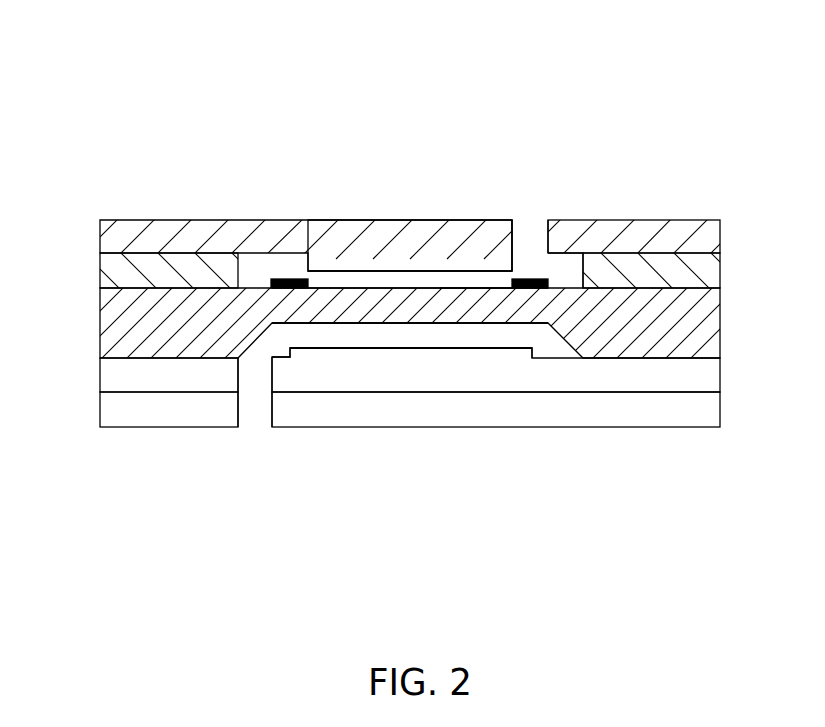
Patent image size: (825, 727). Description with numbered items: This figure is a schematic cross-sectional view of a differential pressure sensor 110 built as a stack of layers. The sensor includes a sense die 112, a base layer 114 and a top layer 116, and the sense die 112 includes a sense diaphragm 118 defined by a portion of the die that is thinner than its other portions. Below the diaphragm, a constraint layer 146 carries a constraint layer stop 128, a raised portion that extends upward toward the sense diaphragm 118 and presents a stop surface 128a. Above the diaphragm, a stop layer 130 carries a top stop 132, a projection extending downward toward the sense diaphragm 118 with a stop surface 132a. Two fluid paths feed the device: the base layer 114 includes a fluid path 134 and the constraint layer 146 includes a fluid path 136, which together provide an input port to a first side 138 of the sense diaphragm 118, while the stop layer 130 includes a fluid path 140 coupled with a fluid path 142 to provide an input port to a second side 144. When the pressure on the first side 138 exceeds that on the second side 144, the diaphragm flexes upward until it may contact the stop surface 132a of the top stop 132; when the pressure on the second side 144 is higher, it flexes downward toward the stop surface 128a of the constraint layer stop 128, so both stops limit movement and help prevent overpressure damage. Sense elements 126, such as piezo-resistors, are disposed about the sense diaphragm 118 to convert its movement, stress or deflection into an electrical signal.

The pressure sensor 110 is at (235, 76).
The sense die 112 is at (717, 319).
The base layer 114 is at (717, 408).
The top layer 116 is at (717, 270).
The sense diaphragm 118 is at (475, 313).
The sense elements 126 is at (290, 290).
The constraint layer stop 128 is at (457, 355).
The stop surface 128a is at (425, 348).
The stop layer 130 is at (717, 236).
The top stop 132 is at (392, 263).
The stop surface 132a is at (364, 278).
The fluid path 134 is at (256, 412).
The fluid path 136 is at (252, 377).
The first side 138 is at (372, 323).
The fluid path 140 is at (532, 227).
The fluid path 142 is at (568, 272).
The second side 144 is at (473, 286).
The constraint layer 146 is at (717, 374).